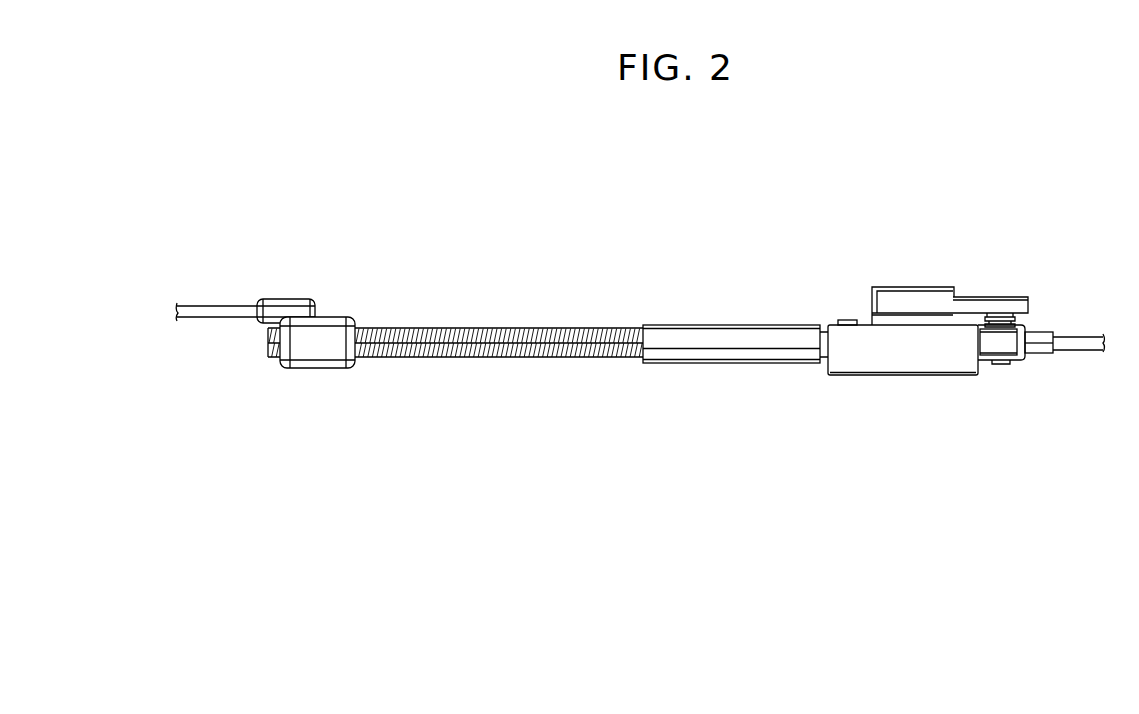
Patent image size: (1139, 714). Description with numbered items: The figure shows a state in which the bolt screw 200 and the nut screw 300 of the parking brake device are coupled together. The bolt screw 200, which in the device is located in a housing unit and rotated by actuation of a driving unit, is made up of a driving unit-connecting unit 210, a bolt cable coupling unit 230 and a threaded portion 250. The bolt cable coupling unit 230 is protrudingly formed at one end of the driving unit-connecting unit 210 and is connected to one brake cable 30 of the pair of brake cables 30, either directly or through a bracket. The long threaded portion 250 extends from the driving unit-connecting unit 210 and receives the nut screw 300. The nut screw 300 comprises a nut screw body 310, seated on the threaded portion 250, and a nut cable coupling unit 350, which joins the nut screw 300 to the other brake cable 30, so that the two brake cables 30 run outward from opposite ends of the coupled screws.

The brake cable 30 is at (212, 310).
The bolt screw 200 is at (660, 297).
The driving unit-connecting unit 210 is at (705, 340).
The bolt cable coupling unit 230 is at (888, 315).
The threaded portion 250 is at (573, 328).
The nut screw 300 is at (322, 287).
The nut screw body 310 is at (327, 335).
The nut cable coupling unit 350 is at (292, 303).